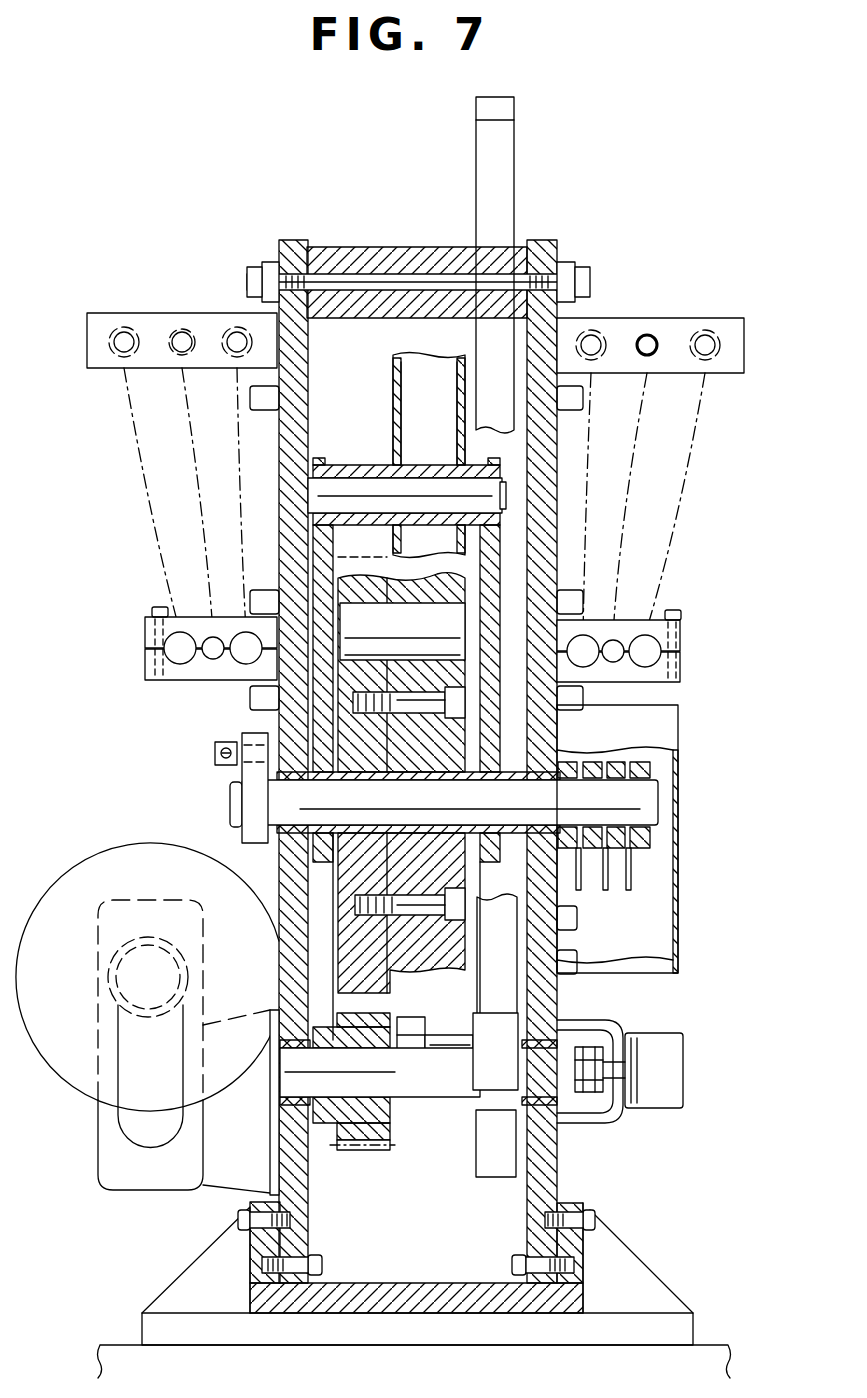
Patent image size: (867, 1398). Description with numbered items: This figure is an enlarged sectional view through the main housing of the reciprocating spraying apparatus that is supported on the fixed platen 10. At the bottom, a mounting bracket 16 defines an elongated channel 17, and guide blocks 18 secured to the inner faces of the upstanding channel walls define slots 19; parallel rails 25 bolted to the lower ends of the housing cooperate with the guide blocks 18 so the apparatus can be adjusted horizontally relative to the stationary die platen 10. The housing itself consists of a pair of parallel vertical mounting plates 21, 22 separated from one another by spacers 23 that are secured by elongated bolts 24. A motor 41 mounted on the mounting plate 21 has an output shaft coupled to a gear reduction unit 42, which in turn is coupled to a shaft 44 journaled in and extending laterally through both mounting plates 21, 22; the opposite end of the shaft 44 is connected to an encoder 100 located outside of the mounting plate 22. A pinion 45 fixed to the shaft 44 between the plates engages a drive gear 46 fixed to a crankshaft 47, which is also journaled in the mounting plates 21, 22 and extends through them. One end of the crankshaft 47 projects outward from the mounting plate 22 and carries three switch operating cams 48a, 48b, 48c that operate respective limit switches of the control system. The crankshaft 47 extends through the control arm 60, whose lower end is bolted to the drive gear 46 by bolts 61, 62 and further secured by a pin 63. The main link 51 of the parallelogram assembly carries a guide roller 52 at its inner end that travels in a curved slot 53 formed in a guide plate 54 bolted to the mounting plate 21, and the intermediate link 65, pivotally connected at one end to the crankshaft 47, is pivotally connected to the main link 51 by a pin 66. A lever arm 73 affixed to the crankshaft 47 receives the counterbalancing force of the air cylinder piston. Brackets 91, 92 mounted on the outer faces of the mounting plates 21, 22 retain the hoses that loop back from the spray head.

The fixed platen 10 is at (705, 1343).
The mounting bracket 16 is at (250, 1250).
The elongated channel 17 is at (382, 1283).
The guide blocks 18 is at (290, 1228).
The slots 19 is at (300, 1252).
The mounting plate 21 is at (279, 460).
The mounting plate 22 is at (553, 462).
The spacers 23 is at (397, 250).
The elongated bolts 24 is at (345, 272).
The parallel rails 25 is at (270, 1278).
The motor 41 is at (130, 843).
The gear reduction unit 42 is at (98, 1138).
The shaft 44 is at (268, 1100).
The pinion 45 is at (392, 1118).
The drive gear 46 is at (355, 555).
The crankshaft 47 is at (628, 795).
The switch operating cam 48a is at (582, 888).
The switch operating cam 48b is at (605, 885).
The switch operating cam 48c is at (635, 875).
The main link 51 is at (392, 428).
The guide roller 52 is at (500, 1020).
The curved slot 53 is at (503, 130).
The guide plate 54 is at (505, 97).
The control arm 60 is at (470, 580).
The bolt 61 is at (410, 712).
The bolt 62 is at (430, 895).
The pin 63 is at (402, 631).
The intermediate link 65 is at (313, 728).
The pin 66 is at (506, 498).
The lever arm 73 is at (250, 778).
The bracket 91 is at (205, 313).
The bracket 92 is at (146, 666).
The encoder 100 is at (690, 1047).